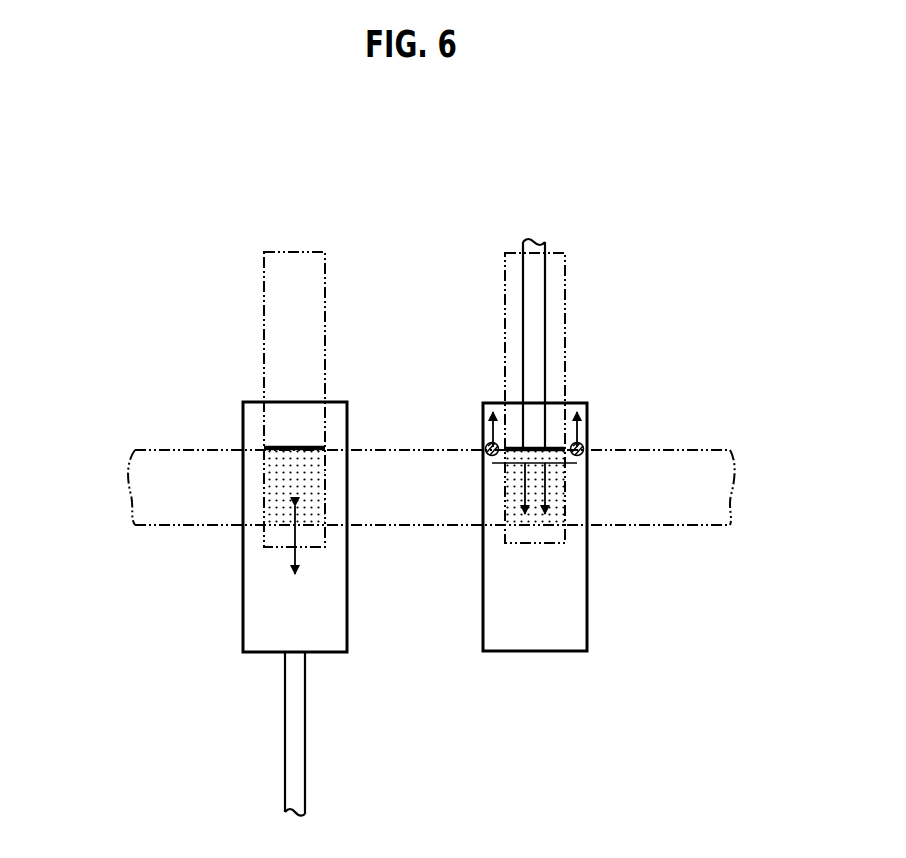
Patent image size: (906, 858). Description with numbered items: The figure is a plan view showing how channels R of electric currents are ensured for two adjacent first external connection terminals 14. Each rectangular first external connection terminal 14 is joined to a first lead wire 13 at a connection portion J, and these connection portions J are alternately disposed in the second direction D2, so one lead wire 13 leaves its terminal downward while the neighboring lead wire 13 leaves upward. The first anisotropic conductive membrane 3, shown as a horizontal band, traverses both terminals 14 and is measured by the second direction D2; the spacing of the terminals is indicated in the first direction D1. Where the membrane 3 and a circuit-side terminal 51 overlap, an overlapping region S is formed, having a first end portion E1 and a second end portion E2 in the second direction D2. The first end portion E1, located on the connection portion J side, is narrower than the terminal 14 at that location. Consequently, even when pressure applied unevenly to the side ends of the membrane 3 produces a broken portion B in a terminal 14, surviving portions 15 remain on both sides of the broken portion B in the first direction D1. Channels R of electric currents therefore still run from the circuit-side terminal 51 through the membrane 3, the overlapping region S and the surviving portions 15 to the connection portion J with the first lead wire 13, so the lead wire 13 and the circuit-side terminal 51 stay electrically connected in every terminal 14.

The first anisotropic conductive membrane 3 is at (677, 450).
The first lead wire 13 is at (285, 740).
The first external connection terminal 14 is at (243, 575).
The surviving portion 15 is at (488, 447).
The circuit-side terminal 51 is at (262, 297).
The broken portion B is at (290, 446).
The connection portion J is at (293, 653).
The overlapping region S is at (275, 492).
The channel of electric current R is at (486, 436).
The first end portion E1 is at (278, 527).
The second end portion E2 is at (536, 527).
The first direction D1 is at (490, 230).
The second direction D2 is at (105, 445).